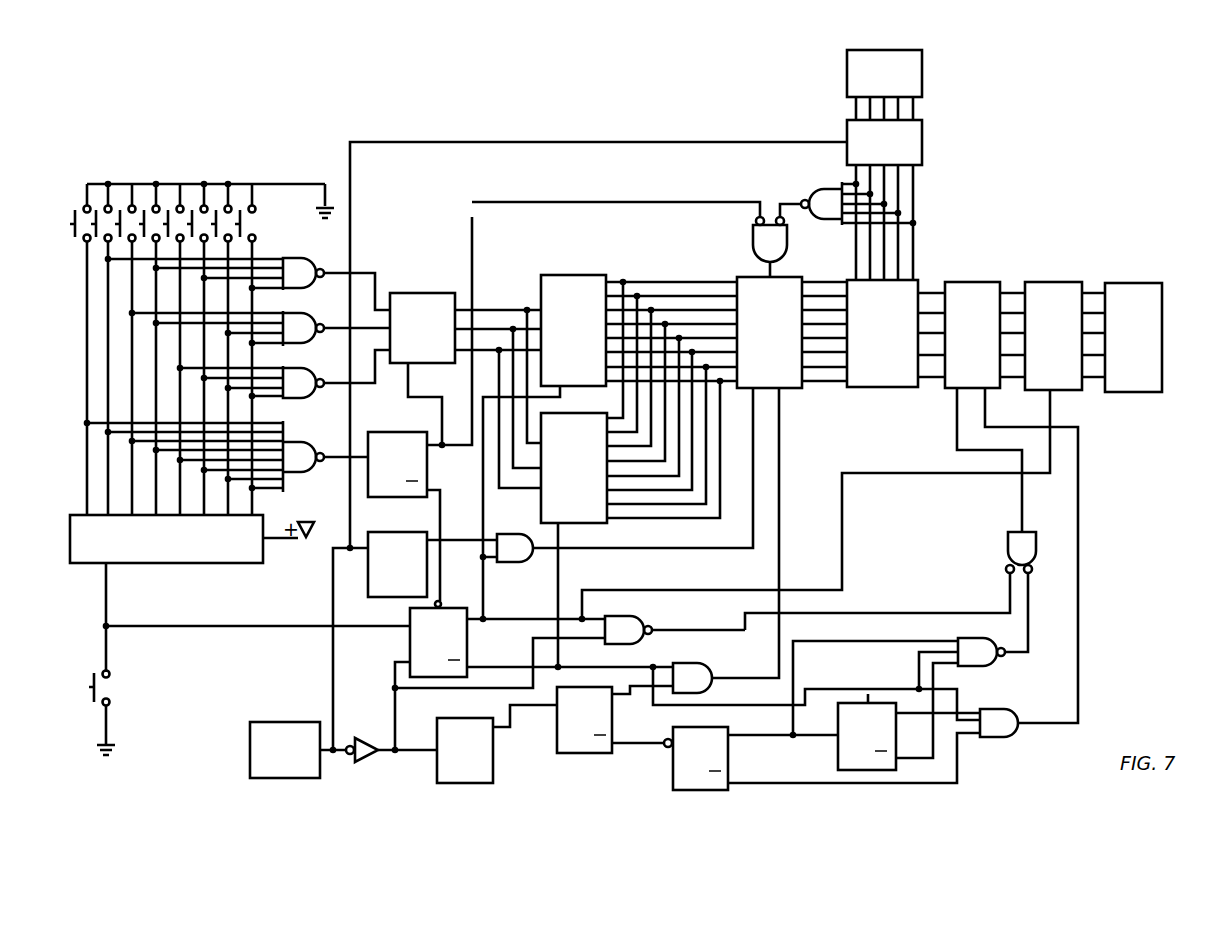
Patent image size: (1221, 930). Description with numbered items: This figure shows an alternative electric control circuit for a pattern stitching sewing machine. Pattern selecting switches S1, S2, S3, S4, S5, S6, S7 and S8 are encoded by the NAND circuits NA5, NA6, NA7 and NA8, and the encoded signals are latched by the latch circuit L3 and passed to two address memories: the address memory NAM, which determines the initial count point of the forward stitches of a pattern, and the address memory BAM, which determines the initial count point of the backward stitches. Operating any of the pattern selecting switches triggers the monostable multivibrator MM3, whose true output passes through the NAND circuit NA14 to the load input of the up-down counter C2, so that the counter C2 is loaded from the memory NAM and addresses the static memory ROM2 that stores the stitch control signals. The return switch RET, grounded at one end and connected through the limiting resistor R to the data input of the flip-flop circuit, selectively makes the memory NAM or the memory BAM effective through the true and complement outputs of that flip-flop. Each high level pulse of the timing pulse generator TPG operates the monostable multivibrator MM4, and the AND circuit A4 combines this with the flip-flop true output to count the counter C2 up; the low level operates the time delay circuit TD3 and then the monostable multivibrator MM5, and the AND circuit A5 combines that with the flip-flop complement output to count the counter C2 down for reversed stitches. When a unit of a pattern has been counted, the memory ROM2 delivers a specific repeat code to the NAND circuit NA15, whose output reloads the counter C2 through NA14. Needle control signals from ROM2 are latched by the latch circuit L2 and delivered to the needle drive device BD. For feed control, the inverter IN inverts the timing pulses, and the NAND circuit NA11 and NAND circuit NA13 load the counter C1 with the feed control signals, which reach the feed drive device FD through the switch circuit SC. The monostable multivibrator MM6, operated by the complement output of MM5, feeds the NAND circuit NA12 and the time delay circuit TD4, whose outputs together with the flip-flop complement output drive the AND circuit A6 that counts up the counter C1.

The pattern selecting switch S1 is at (68, 227).
The pattern selecting switch S2 is at (102, 204).
The pattern selecting switch S3 is at (126, 204).
The pattern selecting switch S4 is at (150, 204).
The pattern selecting switch S5 is at (174, 208).
The pattern selecting switch S6 is at (204, 212).
The pattern selecting switch S7 is at (230, 214).
The pattern selecting switch S8 is at (258, 224).
The NAND circuit NA5 is at (304, 456).
The NAND circuit NA6 is at (303, 371).
The NAND circuit NA7 is at (303, 317).
The NAND circuit NA8 is at (303, 262).
The limiting resistor R is at (176, 553).
The return switch RET is at (121, 688).
The timing pulse generator TPG is at (312, 762).
The inverter IN is at (362, 736).
The time delay circuit TD3 is at (465, 739).
The time delay circuit TD4 is at (867, 721).
The monostable multivibrator MM3 is at (395, 453).
The monostable multivibrator MM4 is at (395, 553).
The monostable multivibrator MM5 is at (584, 731).
The monostable multivibrator MM6 is at (720, 758).
The AND circuit A4 is at (514, 560).
The AND circuit A5 is at (692, 666).
The AND circuit A6 is at (999, 712).
The NAND circuit NA11 is at (628, 619).
The NAND circuit NA12 is at (983, 641).
The NAND circuit NA13 is at (1042, 541).
The NAND circuit NA14 is at (793, 242).
The NAND circuit NA15 is at (813, 196).
The latch circuit L3 is at (435, 331).
The address memory NAM is at (600, 326).
The address memory BAM is at (600, 462).
The up-down counter C2 is at (785, 337).
The static memory ROM2 is at (914, 341).
The counter C1 is at (986, 341).
The switch circuit SC is at (1069, 341).
The feed drive device FD is at (1150, 341).
The needle drive device BD is at (900, 86).
The latch circuit L2 is at (899, 155).